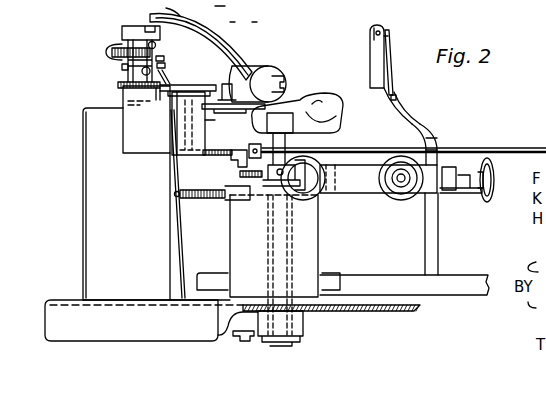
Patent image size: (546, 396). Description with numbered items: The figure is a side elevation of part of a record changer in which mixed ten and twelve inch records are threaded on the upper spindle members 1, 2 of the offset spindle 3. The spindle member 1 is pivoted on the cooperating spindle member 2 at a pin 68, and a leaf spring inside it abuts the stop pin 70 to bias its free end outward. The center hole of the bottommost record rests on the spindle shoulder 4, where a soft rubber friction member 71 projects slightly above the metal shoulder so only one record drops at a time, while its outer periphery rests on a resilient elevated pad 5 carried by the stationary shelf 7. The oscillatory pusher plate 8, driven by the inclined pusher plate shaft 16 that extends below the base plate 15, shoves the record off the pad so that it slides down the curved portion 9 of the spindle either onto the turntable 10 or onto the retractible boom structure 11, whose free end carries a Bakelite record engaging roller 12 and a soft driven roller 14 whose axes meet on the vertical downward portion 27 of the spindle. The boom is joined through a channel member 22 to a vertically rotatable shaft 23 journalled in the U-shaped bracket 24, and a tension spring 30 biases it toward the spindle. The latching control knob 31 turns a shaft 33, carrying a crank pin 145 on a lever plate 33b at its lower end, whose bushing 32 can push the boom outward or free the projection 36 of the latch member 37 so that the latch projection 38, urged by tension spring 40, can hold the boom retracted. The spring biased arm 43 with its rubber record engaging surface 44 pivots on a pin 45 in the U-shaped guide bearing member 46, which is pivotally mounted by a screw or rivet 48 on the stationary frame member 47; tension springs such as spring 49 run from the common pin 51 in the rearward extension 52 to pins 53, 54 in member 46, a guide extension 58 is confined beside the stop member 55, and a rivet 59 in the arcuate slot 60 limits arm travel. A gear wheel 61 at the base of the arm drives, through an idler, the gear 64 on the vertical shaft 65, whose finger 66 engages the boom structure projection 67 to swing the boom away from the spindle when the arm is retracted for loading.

The spindle member 1 is at (370, 64).
The cooperating spindle member 2 is at (391, 57).
The offset spindle 3 is at (417, 116).
The spindle shoulder 4 is at (398, 101).
The resilient elevated pad 5 is at (262, 108).
The stationary shelf 7 is at (120, 228).
The oscillatory pusher plate 8 is at (226, 86).
The curved portion of the spindle 9 is at (431, 126).
The turntable 10 is at (471, 275).
The retractible boom structure 11 is at (366, 186).
The rotatable record engaging roller 12 is at (488, 200).
The driven record engaging roller 14 is at (400, 201).
The crank pin 145 is at (240, 342).
The base plate 15 is at (62, 300).
The pusher plate shaft 16 is at (176, 252).
The channel member 22 is at (328, 156).
The vertically rotatable shaft 23 is at (268, 241).
The U-shaped bracket 24 is at (312, 246).
The vertical downward portion of spindle 27 is at (440, 236).
The tension spring 30 is at (230, 160).
The latching control knob 31 is at (328, 108).
The bushing 32 is at (256, 145).
The shaft 33 is at (300, 153).
The support column lower nut 33b is at (282, 256).
The projection on latch member 36 is at (222, 3).
The latch member 37 is at (229, 15).
The latch member projection 38 is at (253, 15).
The tension spring 40 is at (216, 199).
The rotatable spring biased arm 43 is at (181, 10).
The rubber record engaging surface 44 is at (276, 92).
The pin 45 is at (158, 92).
The U-shaped guide bearing member 46 is at (126, 32).
The stationary frame member 47 is at (144, 152).
The screw or rivet 48 is at (126, 101).
The tension spring 49 is at (121, 67).
The common pin 51 is at (112, 53).
The rearward extension of arm 52 is at (110, 44).
The pin 53 is at (165, 57).
The pin 54 is at (166, 64).
The stop member 55 is at (163, 71).
The guide extension 58 is at (171, 72).
The rivet 59 is at (151, 42).
The arcuate slot 60 is at (168, 31).
The gear wheel 61 is at (122, 85).
The gear 64 is at (196, 86).
The vertical shaft 65 is at (205, 116).
The finger 66 is at (208, 150).
The boom structure projection 67 is at (246, 176).
The pin 68 is at (381, 31).
The stop pin 70 is at (389, 37).
The friction member 71 is at (394, 93).